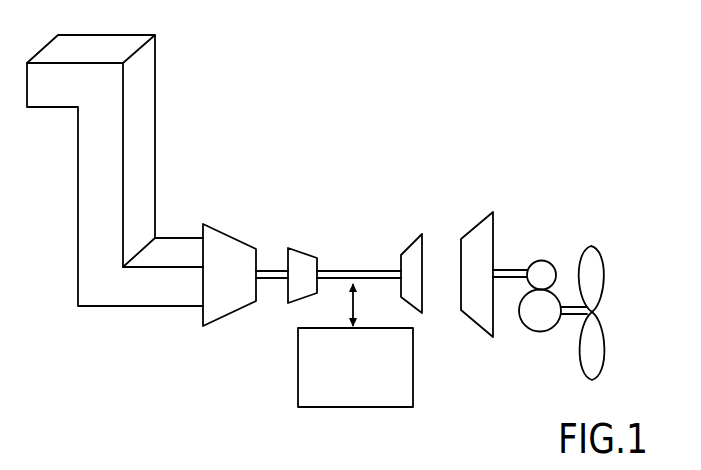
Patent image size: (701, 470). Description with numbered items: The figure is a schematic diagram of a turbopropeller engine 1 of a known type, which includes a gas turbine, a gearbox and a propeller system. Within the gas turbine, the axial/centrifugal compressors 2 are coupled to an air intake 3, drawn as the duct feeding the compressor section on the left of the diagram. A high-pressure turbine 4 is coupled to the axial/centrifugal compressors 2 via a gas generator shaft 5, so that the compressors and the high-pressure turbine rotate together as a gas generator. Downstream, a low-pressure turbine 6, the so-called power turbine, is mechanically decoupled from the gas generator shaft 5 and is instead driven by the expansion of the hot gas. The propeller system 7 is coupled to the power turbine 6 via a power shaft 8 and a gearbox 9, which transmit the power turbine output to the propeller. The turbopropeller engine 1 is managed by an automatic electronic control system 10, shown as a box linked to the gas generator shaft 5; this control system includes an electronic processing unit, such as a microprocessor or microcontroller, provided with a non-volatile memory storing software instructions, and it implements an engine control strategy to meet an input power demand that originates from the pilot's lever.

The turbopropeller engine 1 is at (527, 120).
The axial/centrifugal compressors 2 is at (267, 238).
The air intake 3 is at (182, 221).
The high-pressure turbine 4 is at (412, 249).
The gas generator shaft 5 is at (351, 271).
The low-pressure turbine 6 is at (477, 228).
The propeller system 7 is at (603, 271).
The power shaft 8 is at (511, 269).
The gearbox 9 is at (548, 261).
The automatic electronic control system 10 is at (410, 380).